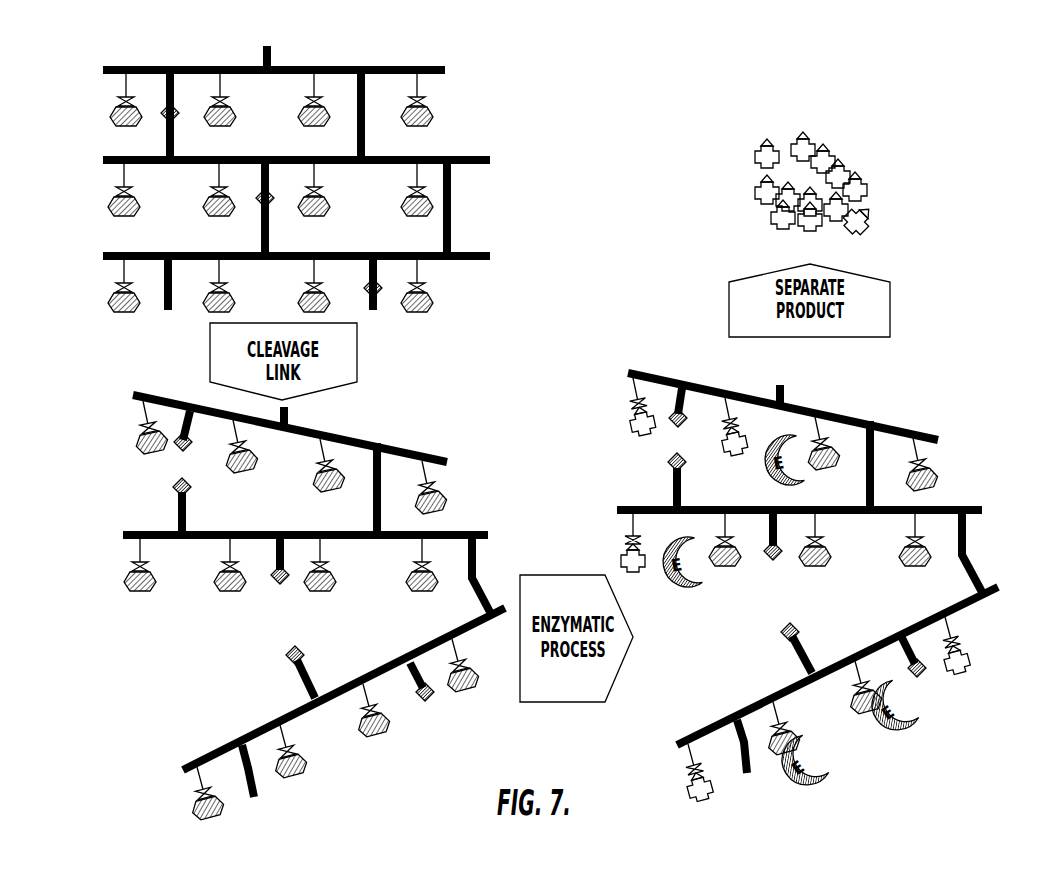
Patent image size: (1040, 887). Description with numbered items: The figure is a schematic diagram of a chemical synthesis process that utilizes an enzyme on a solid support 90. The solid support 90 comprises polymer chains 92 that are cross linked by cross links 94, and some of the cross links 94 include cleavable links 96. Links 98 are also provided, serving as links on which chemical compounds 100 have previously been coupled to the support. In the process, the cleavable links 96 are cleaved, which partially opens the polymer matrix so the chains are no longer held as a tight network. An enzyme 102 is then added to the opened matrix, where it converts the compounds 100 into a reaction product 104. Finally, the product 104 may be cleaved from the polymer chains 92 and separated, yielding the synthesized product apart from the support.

The solid support 90 is at (484, 70).
The polymer chains 92 is at (347, 70).
The cross links 94 is at (174, 136).
The cleavable links 96 is at (175, 107).
The links 98 is at (412, 190).
The chemical compounds 100 is at (413, 214).
The enzyme 102 is at (703, 576).
The reaction product 104 is at (868, 220).